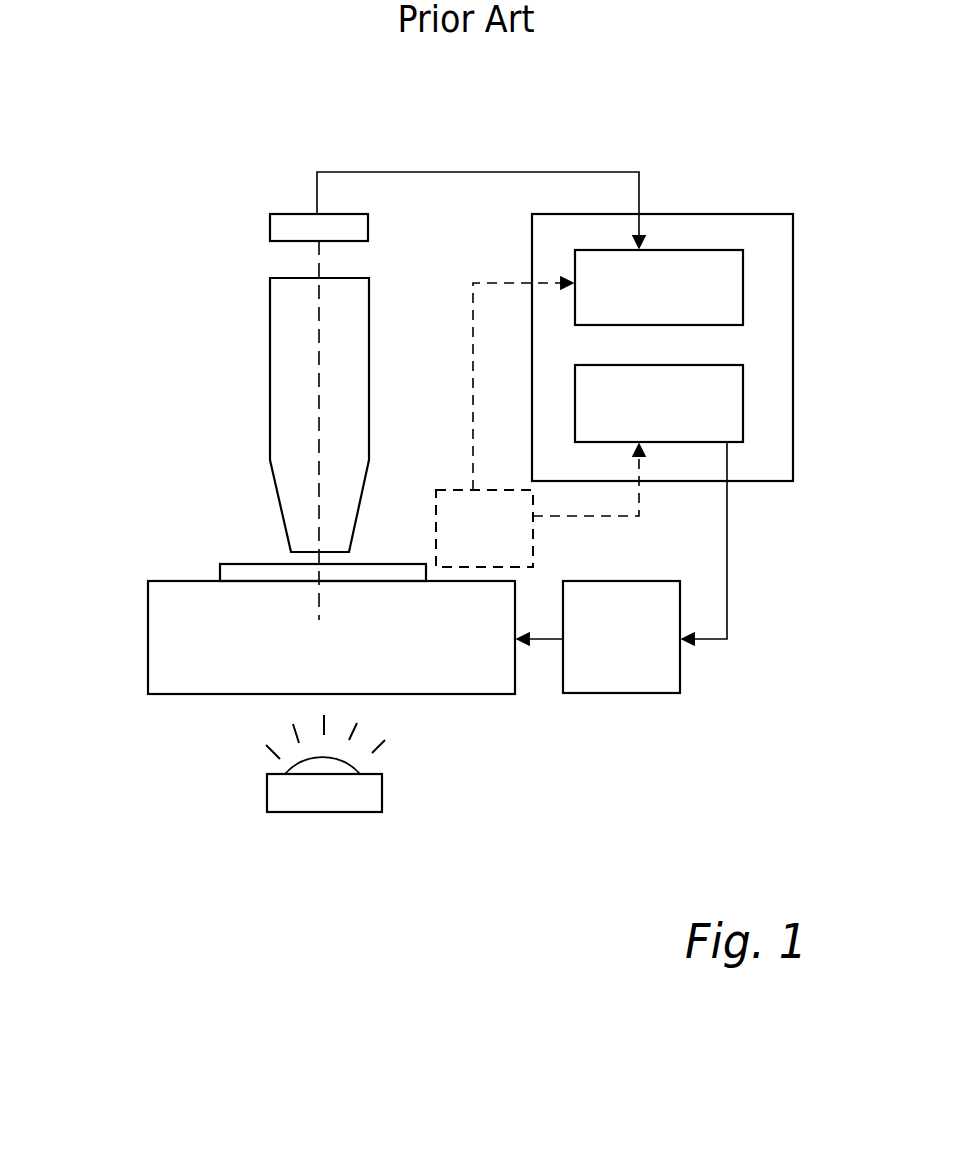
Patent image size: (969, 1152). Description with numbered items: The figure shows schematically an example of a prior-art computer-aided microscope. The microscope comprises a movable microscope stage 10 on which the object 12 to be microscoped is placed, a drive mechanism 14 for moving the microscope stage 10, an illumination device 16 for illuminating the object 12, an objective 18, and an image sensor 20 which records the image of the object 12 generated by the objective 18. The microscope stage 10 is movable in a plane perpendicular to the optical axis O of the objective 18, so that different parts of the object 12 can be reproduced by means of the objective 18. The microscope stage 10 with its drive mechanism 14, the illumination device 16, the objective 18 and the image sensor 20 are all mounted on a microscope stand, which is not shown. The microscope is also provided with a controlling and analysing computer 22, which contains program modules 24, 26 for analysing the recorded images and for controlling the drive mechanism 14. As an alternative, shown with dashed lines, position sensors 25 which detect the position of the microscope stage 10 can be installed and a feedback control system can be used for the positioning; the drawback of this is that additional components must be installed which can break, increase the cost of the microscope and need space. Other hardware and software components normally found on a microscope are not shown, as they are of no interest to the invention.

The microscope stage 10 is at (148, 632).
The object 12 is at (230, 563).
The drive mechanism 14 is at (620, 693).
The illumination device 16 is at (313, 812).
The objective 18 is at (270, 357).
The image sensor 20 is at (287, 211).
The controlling and analysing computer 22 is at (793, 302).
The program module 24 is at (719, 262).
The position sensors 25 is at (455, 490).
The program module 26 is at (730, 408).
The optical axis O is at (320, 348).